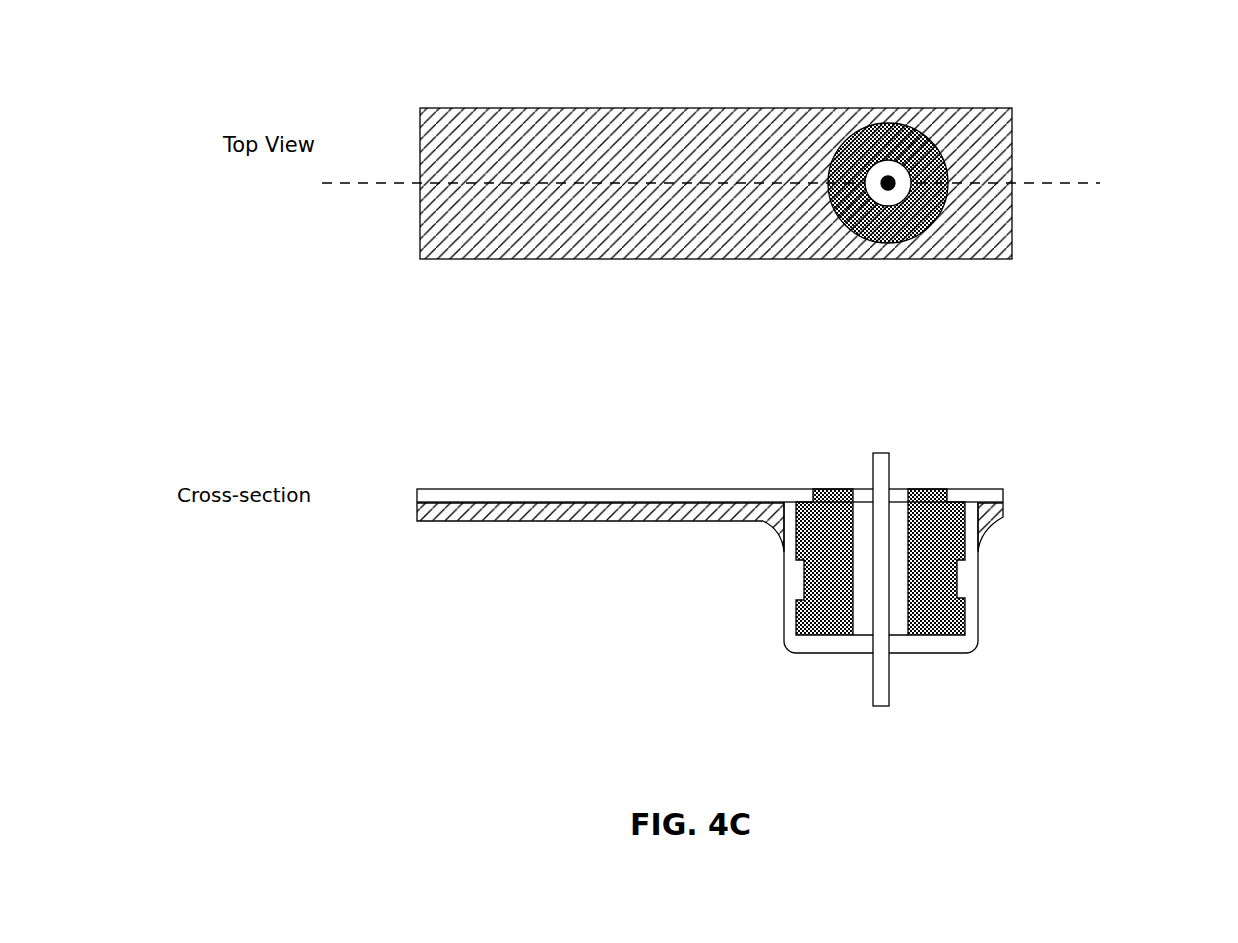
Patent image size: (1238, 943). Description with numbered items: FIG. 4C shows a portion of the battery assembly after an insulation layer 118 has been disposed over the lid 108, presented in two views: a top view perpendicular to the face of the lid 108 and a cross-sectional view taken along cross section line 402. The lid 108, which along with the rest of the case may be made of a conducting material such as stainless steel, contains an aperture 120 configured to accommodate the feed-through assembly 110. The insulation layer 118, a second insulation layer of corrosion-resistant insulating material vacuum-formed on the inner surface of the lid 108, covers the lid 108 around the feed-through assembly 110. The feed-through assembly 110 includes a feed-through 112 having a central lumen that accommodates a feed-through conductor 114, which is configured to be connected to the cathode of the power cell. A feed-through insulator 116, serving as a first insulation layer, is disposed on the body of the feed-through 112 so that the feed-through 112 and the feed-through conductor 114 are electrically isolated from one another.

The lid 108 is at (1012, 108).
The feed-through assembly 110 is at (896, 112).
The feed-through 112 is at (940, 624).
The feed-through conductor 114 is at (880, 680).
The feed-through insulator 116 is at (970, 570).
The insulation layer 118 is at (692, 236).
The aperture 120 is at (828, 489).
The cross section line 402 is at (1100, 183).